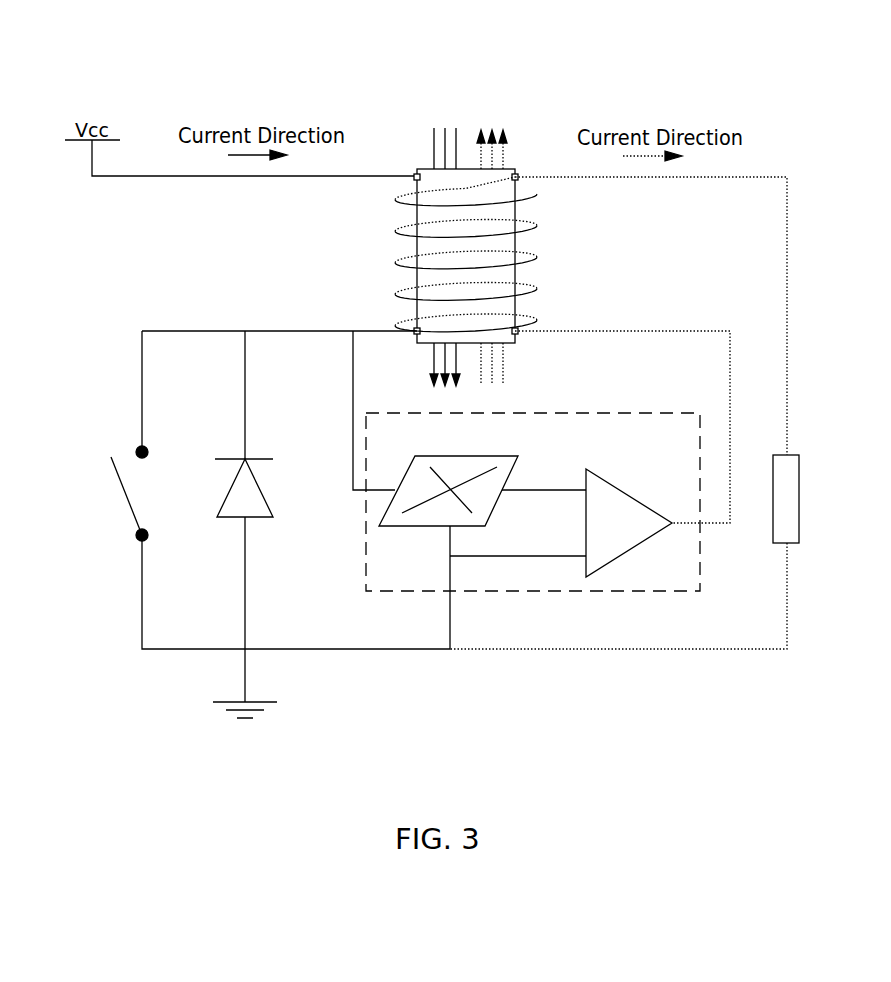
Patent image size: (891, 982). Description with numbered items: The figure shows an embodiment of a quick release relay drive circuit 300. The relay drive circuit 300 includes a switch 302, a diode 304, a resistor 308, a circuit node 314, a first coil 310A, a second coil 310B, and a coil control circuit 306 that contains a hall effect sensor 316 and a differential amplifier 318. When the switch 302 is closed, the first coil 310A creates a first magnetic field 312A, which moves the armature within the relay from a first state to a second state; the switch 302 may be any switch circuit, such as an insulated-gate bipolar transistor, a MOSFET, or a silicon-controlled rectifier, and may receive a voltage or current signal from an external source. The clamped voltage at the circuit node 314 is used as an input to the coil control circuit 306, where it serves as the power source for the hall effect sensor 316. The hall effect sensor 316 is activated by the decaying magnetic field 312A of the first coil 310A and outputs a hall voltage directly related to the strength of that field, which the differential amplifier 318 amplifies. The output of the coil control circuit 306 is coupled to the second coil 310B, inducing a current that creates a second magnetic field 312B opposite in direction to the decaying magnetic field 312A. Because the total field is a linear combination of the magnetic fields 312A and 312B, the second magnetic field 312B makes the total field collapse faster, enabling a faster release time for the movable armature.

The quick release relay drive circuit 300 is at (783, 74).
The switch 302 is at (135, 535).
The diode 304 is at (267, 500).
The coil control circuit 306 is at (622, 413).
The resistor 308 is at (800, 468).
The first coil 310A is at (397, 268).
The second coil 310B is at (533, 238).
The first magnetic field 312A is at (433, 131).
The second magnetic field 312B is at (500, 131).
The circuit node 314 is at (175, 330).
The hall effect sensor 316 is at (521, 456).
The differential amplifier 318 is at (642, 500).